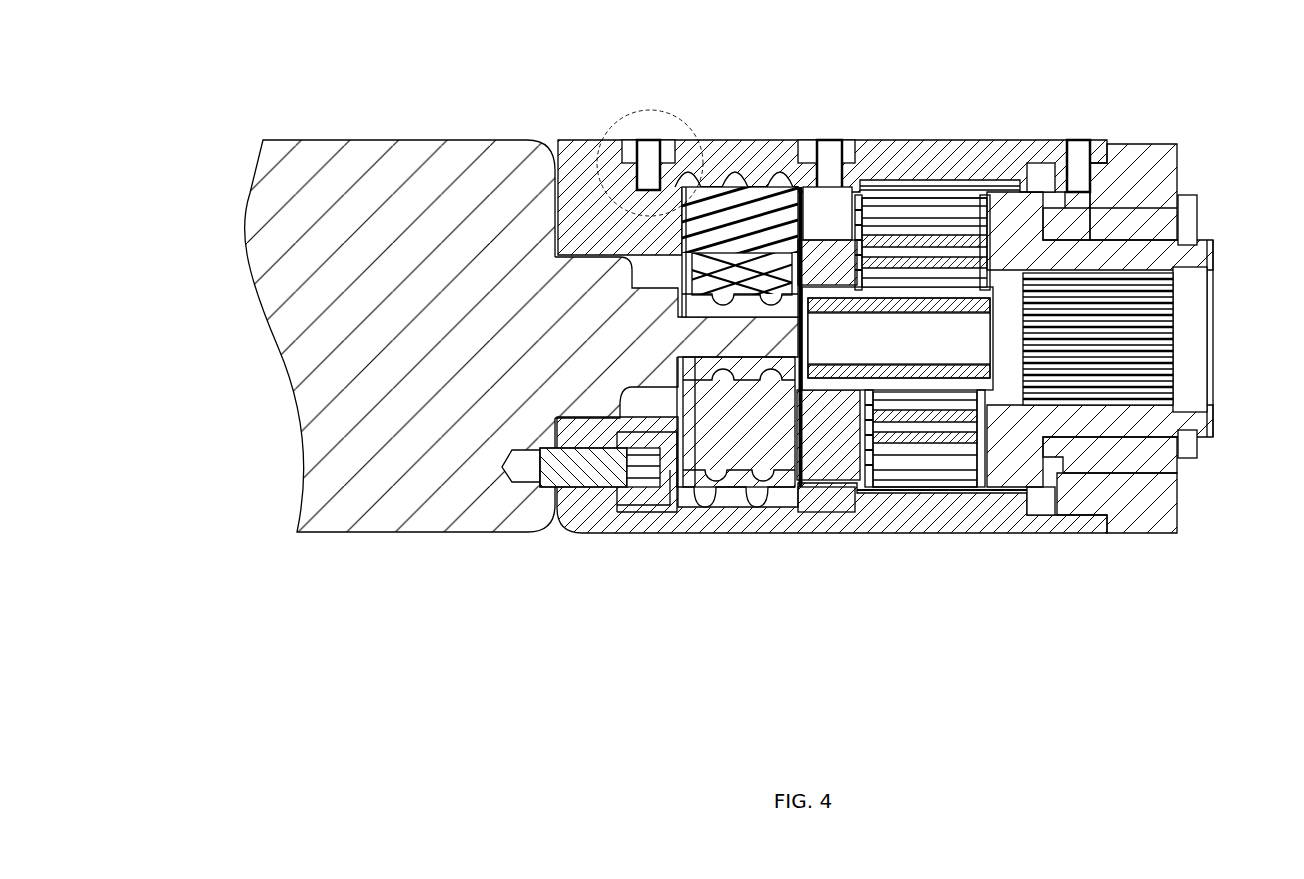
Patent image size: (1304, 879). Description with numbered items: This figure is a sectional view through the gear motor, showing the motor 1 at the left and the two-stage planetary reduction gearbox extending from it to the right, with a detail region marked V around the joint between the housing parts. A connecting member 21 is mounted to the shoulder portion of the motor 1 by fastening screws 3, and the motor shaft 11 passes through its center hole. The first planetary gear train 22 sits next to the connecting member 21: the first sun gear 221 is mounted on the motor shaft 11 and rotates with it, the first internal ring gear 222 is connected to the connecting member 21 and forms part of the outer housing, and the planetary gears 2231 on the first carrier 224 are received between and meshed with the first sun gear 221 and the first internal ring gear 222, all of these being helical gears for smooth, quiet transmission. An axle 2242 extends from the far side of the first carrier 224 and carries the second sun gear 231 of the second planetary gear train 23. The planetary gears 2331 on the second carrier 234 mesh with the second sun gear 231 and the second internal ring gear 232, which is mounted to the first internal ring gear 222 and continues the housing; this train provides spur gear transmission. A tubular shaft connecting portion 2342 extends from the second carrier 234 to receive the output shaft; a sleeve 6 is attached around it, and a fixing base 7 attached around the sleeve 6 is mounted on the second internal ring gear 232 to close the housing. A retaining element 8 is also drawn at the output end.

The motor 1 is at (292, 272).
The motor shaft 11 is at (645, 352).
The fastening screws 3 is at (520, 475).
The connecting member 21 is at (587, 513).
The first planetary gear train 22 is at (831, 383).
The first sun gear 221 is at (728, 405).
The planetary gears 2231 is at (750, 470).
The first internal ring gear 222 is at (818, 527).
The first carrier 224 is at (845, 460).
The axle 2242 is at (957, 327).
The second planetary gear train 23 is at (1034, 383).
The second sun gear 231 is at (928, 385).
The planetary gears 2331 is at (925, 430).
The second internal ring gear 232 is at (1017, 465).
The shaft connecting portion 2342 is at (1043, 277).
The second carrier 234 is at (1115, 526).
The sleeve 6 is at (1131, 222).
The fixing base 7 is at (1148, 158).
The retaining ring 8 is at (1192, 207).
The detail view circle V is at (640, 110).